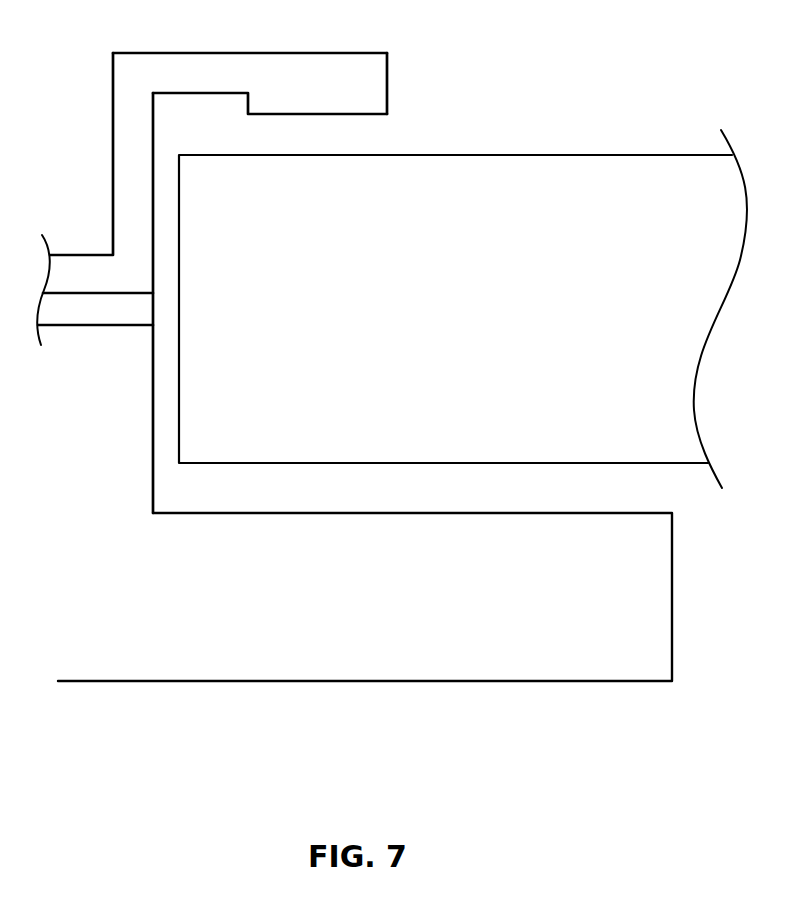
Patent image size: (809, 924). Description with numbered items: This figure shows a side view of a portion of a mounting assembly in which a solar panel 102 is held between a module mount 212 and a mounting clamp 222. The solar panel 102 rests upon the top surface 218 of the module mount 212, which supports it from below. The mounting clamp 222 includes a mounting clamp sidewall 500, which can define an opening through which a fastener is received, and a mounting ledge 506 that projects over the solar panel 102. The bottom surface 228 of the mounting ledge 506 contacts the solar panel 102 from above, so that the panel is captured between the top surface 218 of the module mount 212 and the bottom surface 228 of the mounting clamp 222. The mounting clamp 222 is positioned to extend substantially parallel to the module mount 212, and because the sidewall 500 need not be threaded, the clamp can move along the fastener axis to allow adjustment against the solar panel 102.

The solar panel 102 is at (490, 172).
The module mount 212 is at (150, 437).
The top surface 218 is at (383, 513).
The mounting clamp 222 is at (183, 52).
The bottom surface 228 is at (361, 114).
The mounting clamp sidewall 500 is at (89, 255).
The mounting ledge 506 is at (315, 52).